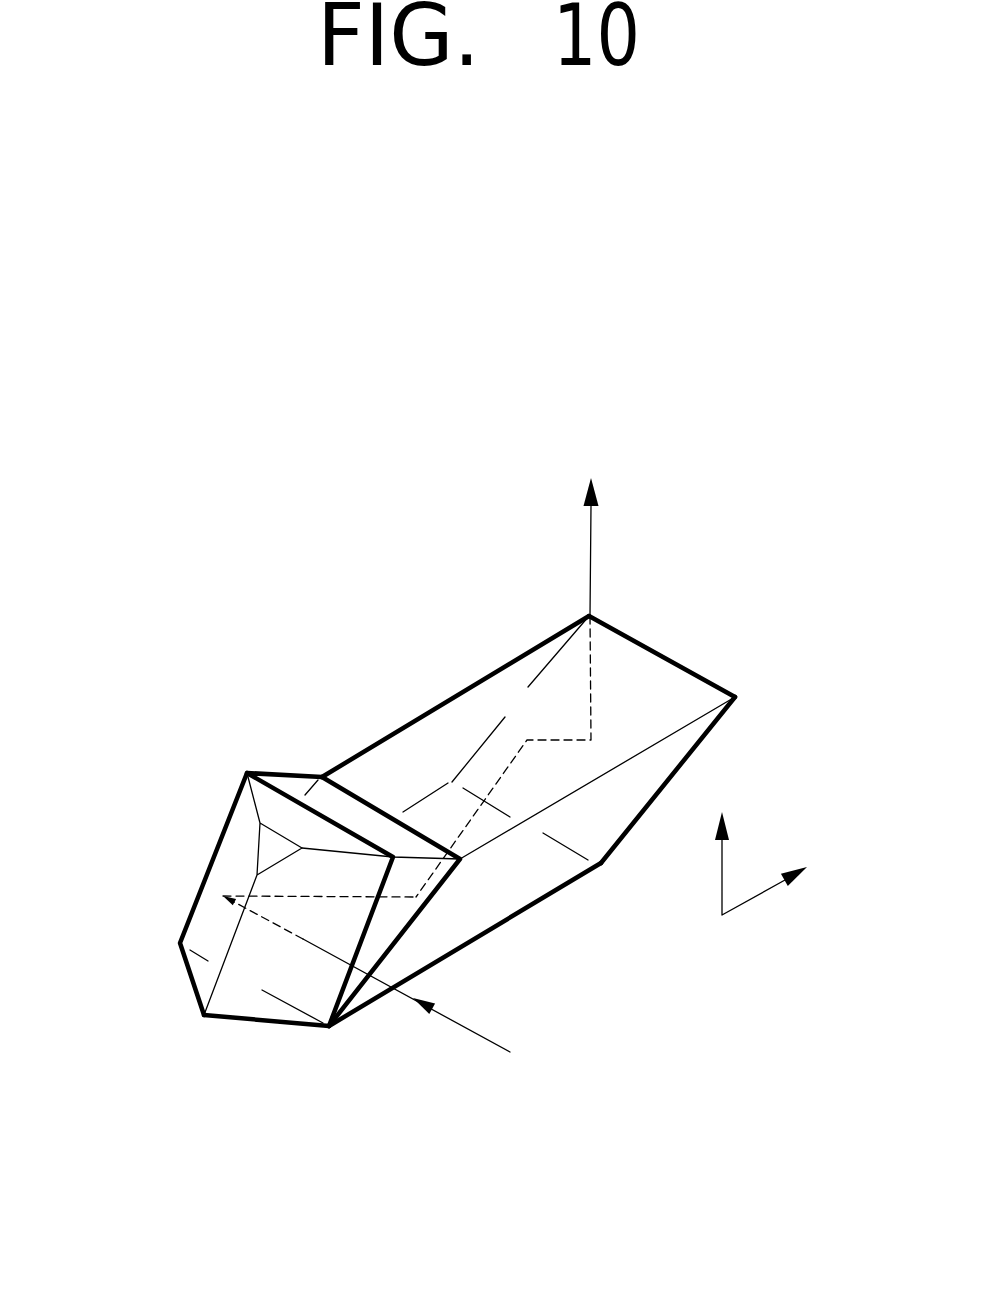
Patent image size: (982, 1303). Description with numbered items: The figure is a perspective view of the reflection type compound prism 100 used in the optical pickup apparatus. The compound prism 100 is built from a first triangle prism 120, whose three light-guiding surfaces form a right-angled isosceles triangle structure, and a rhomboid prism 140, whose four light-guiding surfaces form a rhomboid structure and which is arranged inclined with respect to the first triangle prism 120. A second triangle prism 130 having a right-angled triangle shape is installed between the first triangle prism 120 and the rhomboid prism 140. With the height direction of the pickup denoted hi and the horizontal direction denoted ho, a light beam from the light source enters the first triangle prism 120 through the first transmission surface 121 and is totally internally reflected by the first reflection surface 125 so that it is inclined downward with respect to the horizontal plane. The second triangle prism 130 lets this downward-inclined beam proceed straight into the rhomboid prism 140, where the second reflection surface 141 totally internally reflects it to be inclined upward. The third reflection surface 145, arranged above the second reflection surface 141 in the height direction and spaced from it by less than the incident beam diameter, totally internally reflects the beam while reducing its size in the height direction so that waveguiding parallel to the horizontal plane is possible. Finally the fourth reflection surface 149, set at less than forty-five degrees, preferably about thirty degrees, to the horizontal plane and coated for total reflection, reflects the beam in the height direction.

The reflection type compound prism 100 is at (185, 682).
The first triangle prism 120 is at (276, 778).
The first transmission surface 121 is at (237, 1023).
The first reflection surface 125 is at (220, 853).
The second triangle prism 130 is at (420, 936).
The rhomboid prism 140 is at (680, 636).
The second reflection surface 141 is at (562, 877).
The third reflection surface 145 is at (475, 717).
The fourth reflection surface 149 is at (690, 758).